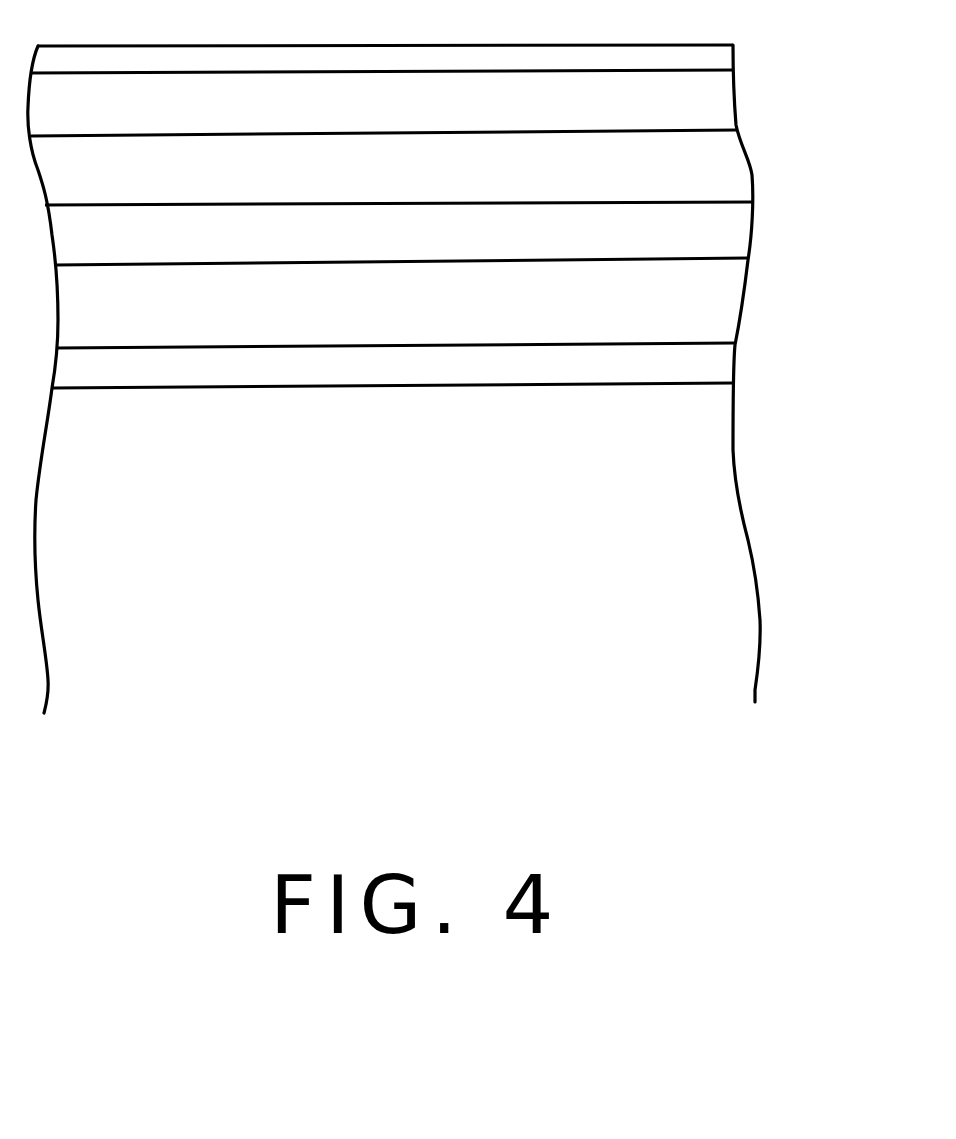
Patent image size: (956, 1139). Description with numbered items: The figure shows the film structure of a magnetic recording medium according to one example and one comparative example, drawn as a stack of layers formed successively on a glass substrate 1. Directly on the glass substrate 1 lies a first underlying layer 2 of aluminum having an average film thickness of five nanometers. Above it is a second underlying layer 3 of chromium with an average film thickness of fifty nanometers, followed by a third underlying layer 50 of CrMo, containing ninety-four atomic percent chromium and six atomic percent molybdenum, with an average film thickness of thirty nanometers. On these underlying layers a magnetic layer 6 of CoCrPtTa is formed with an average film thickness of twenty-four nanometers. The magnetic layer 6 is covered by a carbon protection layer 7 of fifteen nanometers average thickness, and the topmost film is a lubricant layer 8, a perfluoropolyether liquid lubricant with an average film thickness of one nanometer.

The glass substrate 1 is at (722, 497).
The first underlying layer 2 is at (720, 364).
The second underlying layer 3 is at (717, 308).
The third underlying layer 50 is at (727, 225).
The magnetic layer 6 is at (727, 173).
The protection layer 7 is at (725, 103).
The lubricant layer 8 is at (723, 53).